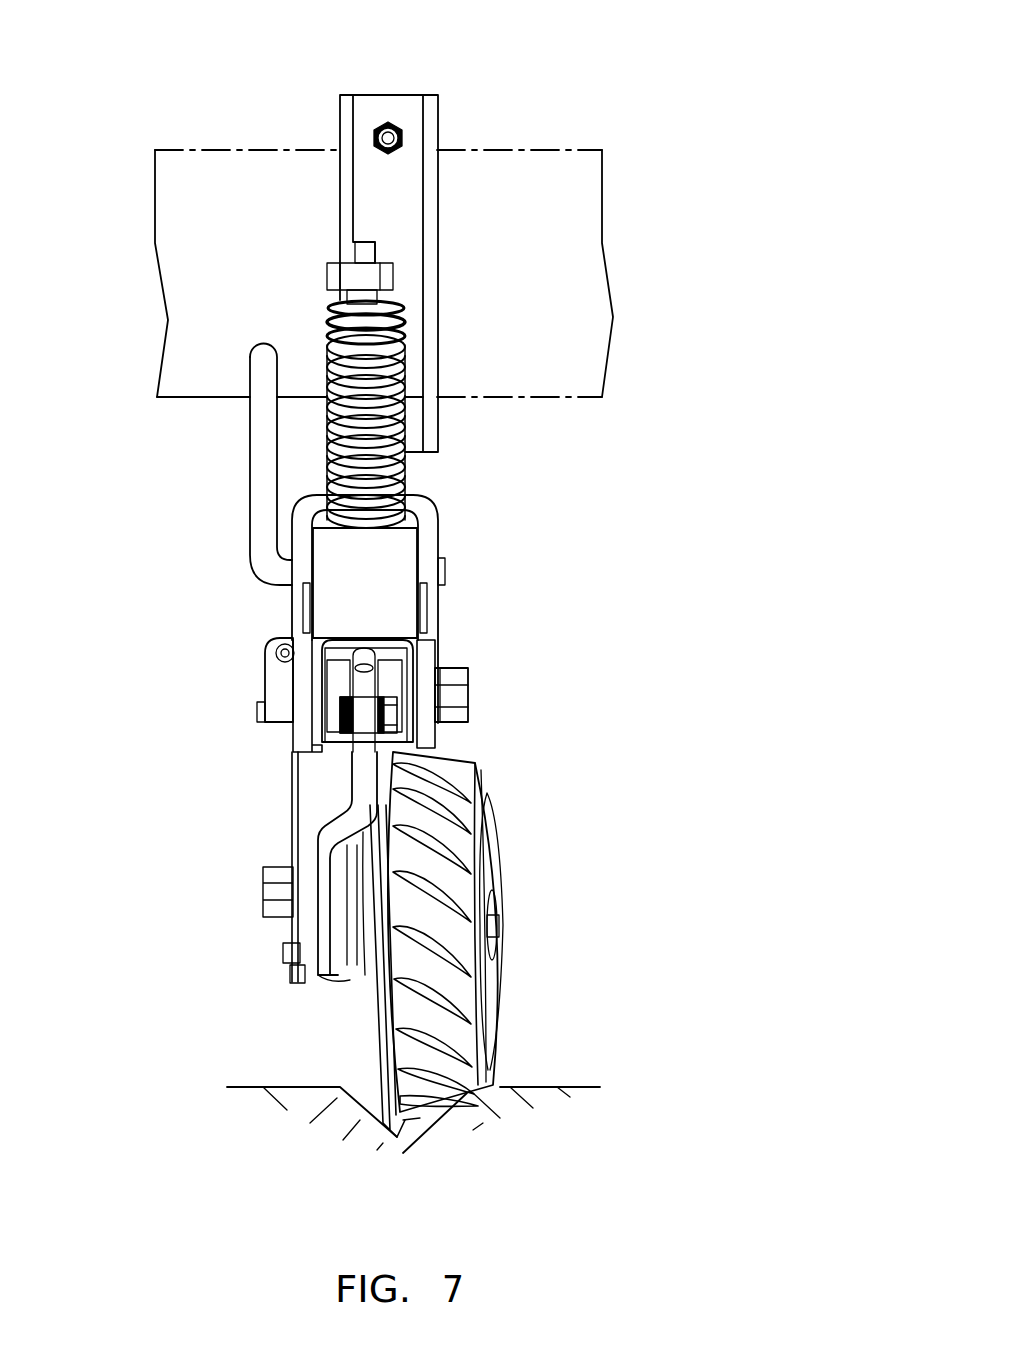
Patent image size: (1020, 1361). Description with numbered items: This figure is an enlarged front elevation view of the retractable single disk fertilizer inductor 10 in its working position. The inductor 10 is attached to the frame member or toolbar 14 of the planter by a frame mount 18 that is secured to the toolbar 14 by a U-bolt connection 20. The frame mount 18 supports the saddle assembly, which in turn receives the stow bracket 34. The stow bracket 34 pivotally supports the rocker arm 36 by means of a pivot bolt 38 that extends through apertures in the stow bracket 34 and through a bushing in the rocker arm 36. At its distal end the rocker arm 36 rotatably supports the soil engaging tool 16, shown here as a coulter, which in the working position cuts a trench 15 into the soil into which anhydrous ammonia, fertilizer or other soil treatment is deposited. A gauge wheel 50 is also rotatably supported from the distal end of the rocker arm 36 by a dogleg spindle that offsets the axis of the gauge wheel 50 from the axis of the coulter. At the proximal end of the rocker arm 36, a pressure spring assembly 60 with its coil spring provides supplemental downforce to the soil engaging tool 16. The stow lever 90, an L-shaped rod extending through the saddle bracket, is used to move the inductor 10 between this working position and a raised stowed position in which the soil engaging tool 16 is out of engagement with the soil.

The retractable single disk fertilizer inductor 10 is at (660, 524).
The frame member or toolbar 14 is at (186, 250).
The trench 15 is at (367, 1090).
The soil engaging tool 16 is at (358, 1026).
The frame mount 18 is at (475, 81).
The U-bolt connection 20 is at (388, 126).
The stow bracket 34 is at (402, 563).
The rocker arm 36 is at (315, 793).
The pivot bolt 38 is at (278, 680).
The gauge wheel 50 is at (480, 764).
The pressure spring assembly 60 is at (313, 345).
The stow lever 90 is at (208, 494).